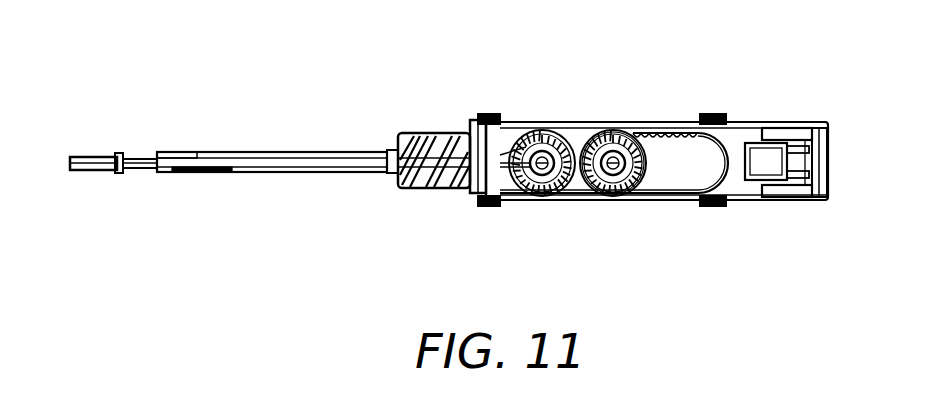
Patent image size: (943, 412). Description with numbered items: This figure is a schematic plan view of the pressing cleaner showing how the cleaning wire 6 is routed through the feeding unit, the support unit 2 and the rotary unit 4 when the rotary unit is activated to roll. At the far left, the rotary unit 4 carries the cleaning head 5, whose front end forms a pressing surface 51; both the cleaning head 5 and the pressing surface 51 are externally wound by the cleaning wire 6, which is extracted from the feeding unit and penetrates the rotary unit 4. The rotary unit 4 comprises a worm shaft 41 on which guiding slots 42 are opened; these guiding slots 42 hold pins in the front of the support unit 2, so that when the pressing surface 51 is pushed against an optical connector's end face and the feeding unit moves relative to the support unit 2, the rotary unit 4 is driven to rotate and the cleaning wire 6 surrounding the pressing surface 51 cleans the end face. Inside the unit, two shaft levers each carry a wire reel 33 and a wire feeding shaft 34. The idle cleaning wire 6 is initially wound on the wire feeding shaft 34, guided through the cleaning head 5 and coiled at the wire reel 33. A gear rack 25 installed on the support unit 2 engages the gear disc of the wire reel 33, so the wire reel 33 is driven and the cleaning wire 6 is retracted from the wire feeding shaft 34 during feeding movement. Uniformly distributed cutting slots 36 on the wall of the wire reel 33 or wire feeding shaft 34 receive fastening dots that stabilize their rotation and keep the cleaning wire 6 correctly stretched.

The support unit 2 is at (745, 127).
The rotary unit 4 is at (326, 151).
The cleaning head 5 is at (116, 171).
The cleaning wire 6 is at (514, 197).
The gear rack 25 is at (676, 128).
The wire reel 33 is at (626, 200).
The wire feeding shaft 34 is at (548, 198).
The cutting slots 36 is at (610, 197).
The worm shaft 41 is at (416, 134).
The guiding slots 42 is at (448, 138).
The pressing surface 51 is at (74, 157).